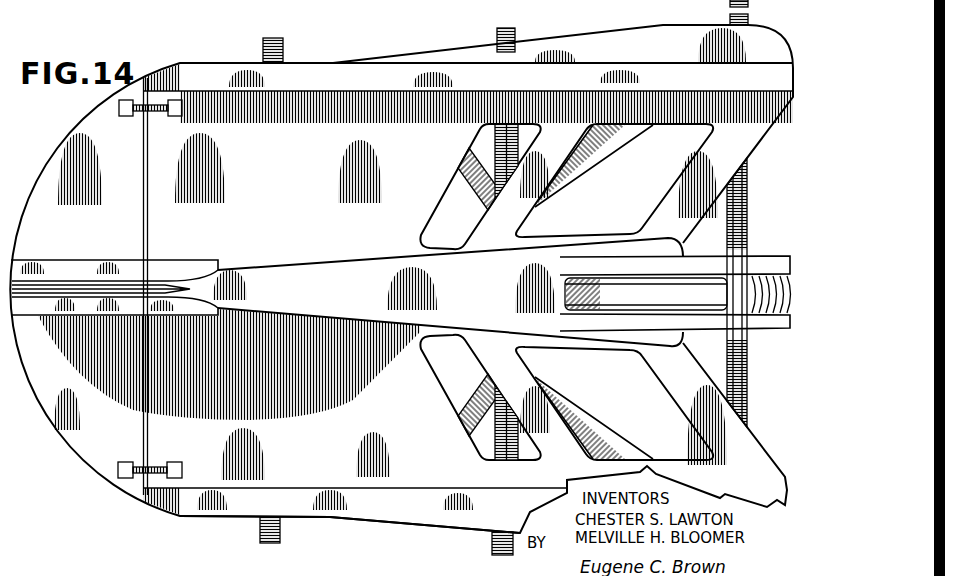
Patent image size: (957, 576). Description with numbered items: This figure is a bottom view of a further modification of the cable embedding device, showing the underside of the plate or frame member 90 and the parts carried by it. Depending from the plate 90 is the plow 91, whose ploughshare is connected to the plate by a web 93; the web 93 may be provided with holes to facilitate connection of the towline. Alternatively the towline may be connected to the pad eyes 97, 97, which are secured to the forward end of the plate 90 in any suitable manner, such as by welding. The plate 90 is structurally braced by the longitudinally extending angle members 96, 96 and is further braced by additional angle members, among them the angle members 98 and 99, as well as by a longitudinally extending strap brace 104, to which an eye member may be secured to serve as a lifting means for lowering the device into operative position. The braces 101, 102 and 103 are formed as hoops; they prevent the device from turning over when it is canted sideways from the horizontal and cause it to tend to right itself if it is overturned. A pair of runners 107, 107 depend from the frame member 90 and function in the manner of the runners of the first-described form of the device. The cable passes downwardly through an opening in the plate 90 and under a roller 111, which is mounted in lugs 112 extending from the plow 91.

The plate or frame member 90 is at (401, 280).
The plow 91 is at (397, 267).
The web 93 is at (85, 290).
The angle members 96 is at (58, 298).
The pad eyes 97 is at (143, 116).
The angle member 98 is at (475, 191).
The angle member 99 is at (628, 148).
The hoop brace 101 is at (263, 50).
The hoop brace 102 is at (497, 40).
The hoop brace 103 is at (730, 17).
The strap brace 104 is at (583, 287).
The runners 107 is at (397, 72).
The roller 111 is at (763, 276).
The lugs 112 is at (685, 263).